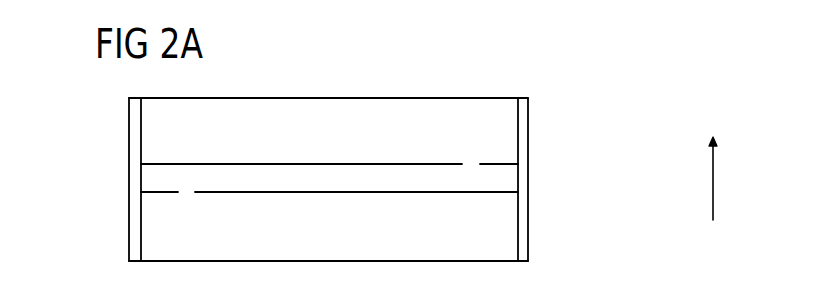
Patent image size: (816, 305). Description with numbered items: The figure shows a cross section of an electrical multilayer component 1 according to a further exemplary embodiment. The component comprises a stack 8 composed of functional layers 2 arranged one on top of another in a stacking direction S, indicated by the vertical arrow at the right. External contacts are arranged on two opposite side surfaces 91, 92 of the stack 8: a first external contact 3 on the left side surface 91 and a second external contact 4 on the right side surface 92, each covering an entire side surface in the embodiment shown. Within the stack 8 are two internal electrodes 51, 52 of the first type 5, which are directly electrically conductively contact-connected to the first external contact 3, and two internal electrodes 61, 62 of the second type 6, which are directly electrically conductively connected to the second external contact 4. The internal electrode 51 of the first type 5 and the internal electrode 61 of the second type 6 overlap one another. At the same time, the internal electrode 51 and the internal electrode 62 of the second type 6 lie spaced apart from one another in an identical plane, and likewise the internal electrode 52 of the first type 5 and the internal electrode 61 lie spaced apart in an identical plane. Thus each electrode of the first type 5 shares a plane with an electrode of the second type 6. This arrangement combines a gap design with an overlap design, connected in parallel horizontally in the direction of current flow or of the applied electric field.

The electrical multilayer component 1 is at (627, 106).
The functional layers 2 is at (505, 131).
The first external contact 3 is at (126, 241).
The second external contact 4 is at (528, 245).
The first type 5 is at (74, 147).
The internal electrode of the first type 51 is at (149, 165).
The internal electrode of the first type 52 is at (149, 195).
The second type 6 is at (582, 158).
The internal electrode of the second type 61 is at (500, 196).
The internal electrode of the second type 62 is at (504, 168).
The stack 8 is at (487, 107).
The first side surface 91 is at (140, 119).
The second side surface 92 is at (524, 112).
The stacking direction S is at (721, 176).